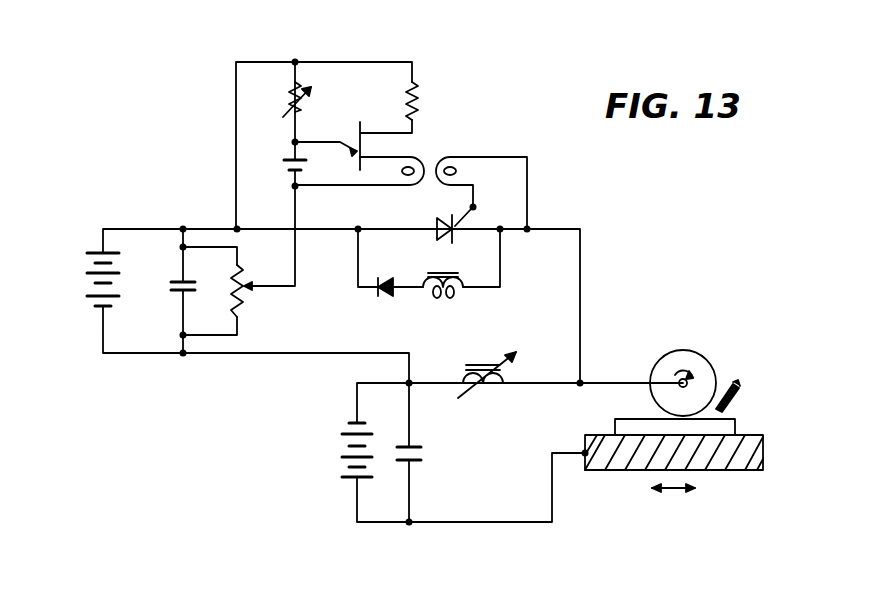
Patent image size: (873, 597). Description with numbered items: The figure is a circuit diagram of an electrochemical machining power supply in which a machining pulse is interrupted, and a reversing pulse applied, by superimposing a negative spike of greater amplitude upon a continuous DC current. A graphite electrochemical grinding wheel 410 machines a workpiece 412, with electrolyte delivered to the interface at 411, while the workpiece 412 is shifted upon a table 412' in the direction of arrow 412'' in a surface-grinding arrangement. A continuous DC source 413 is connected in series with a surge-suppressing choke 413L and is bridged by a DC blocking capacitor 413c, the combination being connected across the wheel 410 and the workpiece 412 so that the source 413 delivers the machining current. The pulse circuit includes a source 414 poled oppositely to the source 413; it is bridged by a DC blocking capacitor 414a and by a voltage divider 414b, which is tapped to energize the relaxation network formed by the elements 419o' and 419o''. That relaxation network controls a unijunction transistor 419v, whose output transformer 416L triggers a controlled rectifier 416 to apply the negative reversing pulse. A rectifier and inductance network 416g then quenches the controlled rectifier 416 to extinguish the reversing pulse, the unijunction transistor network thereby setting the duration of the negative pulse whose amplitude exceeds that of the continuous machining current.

The graphite electrochemical grinding wheel 410 is at (700, 359).
The electrolyte delivery point 411 is at (740, 390).
The workpiece 412 is at (709, 422).
The table 412' is at (707, 452).
The arrow 412'' is at (689, 505).
The continuous DC source 413 is at (343, 456).
The DC blocking capacitor 413c is at (420, 461).
The surge-suppressing choke 413L is at (500, 390).
The source 414 is at (88, 273).
The DC blocking capacitor 414a is at (178, 282).
The voltage divider 414b is at (244, 304).
The controlled rectifier 416 is at (453, 216).
The output transformer 416L is at (429, 168).
The rectifier and inductance network 416g is at (441, 296).
The relaxation network element 419o' is at (278, 68).
The relaxation network element 419o'' is at (238, 171).
The unijunction transistor 419v is at (360, 124).